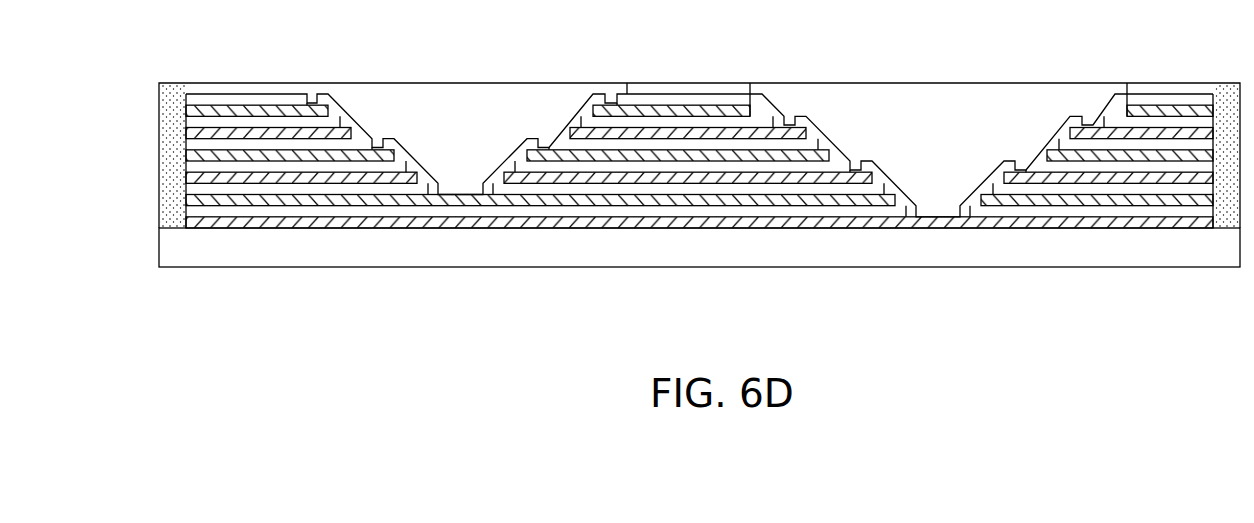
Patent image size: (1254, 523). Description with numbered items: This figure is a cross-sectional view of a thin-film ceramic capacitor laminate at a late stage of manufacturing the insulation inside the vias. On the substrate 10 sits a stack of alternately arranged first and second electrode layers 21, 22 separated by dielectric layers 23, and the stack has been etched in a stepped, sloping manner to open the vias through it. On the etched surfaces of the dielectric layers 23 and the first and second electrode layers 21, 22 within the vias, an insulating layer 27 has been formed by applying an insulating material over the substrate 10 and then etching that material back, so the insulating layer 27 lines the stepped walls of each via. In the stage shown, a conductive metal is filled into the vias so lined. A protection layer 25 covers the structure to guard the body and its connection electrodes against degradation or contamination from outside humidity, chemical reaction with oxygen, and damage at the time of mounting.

The substrate 10 is at (262, 250).
The first electrode layer 21 is at (186, 212).
The second electrode layer 22 is at (182, 202).
The dielectric layer 23 is at (183, 217).
The protection layer 25 is at (173, 83).
The insulating layer 27 is at (572, 107).